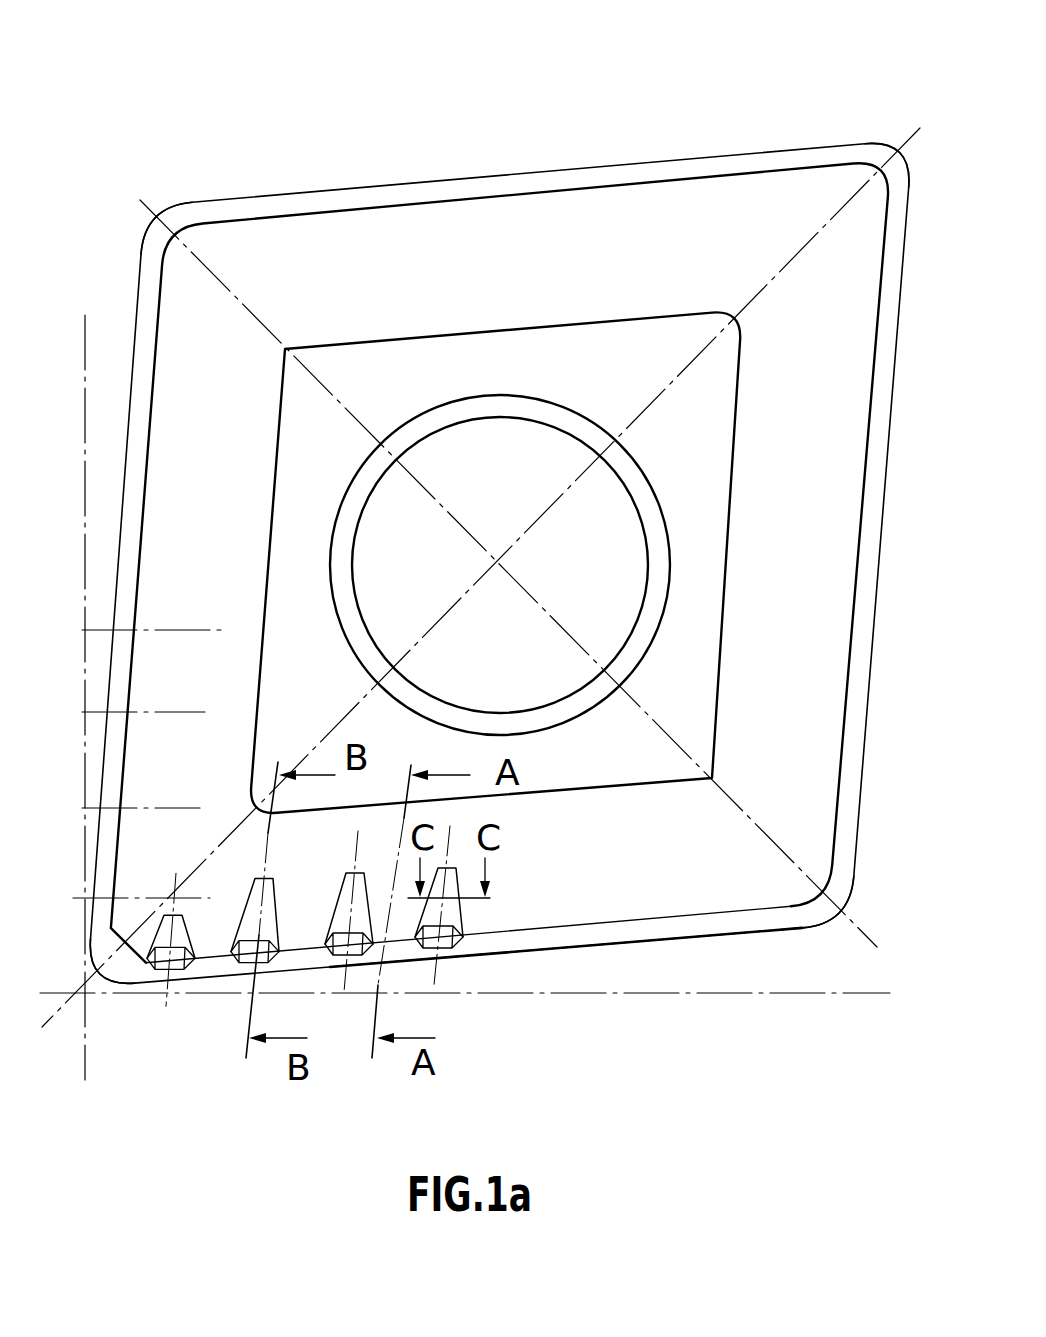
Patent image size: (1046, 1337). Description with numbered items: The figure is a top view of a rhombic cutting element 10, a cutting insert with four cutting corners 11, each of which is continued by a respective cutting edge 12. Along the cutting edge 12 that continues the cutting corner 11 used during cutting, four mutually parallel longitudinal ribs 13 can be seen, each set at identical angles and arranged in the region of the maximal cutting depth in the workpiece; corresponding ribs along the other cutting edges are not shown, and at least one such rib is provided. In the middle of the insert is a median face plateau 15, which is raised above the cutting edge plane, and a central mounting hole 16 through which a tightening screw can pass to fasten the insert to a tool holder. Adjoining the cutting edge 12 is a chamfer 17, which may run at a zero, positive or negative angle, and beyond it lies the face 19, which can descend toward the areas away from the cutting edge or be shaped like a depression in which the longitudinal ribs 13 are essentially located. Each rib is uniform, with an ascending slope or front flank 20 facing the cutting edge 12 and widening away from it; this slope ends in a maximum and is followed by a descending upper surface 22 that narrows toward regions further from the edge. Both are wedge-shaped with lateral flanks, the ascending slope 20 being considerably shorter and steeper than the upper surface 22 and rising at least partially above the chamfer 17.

The cutting element 10 is at (497, 158).
The cutting corner 11 is at (186, 203).
The cutting edge 12 is at (766, 933).
The longitudinal rib 13 is at (332, 876).
The median face plateau 15 is at (703, 456).
The central mounting hole 16 is at (596, 573).
The chamfer 17 is at (658, 928).
The face 19 is at (808, 604).
The ascending slope 20 is at (273, 968).
The descending upper surface 22 is at (339, 916).